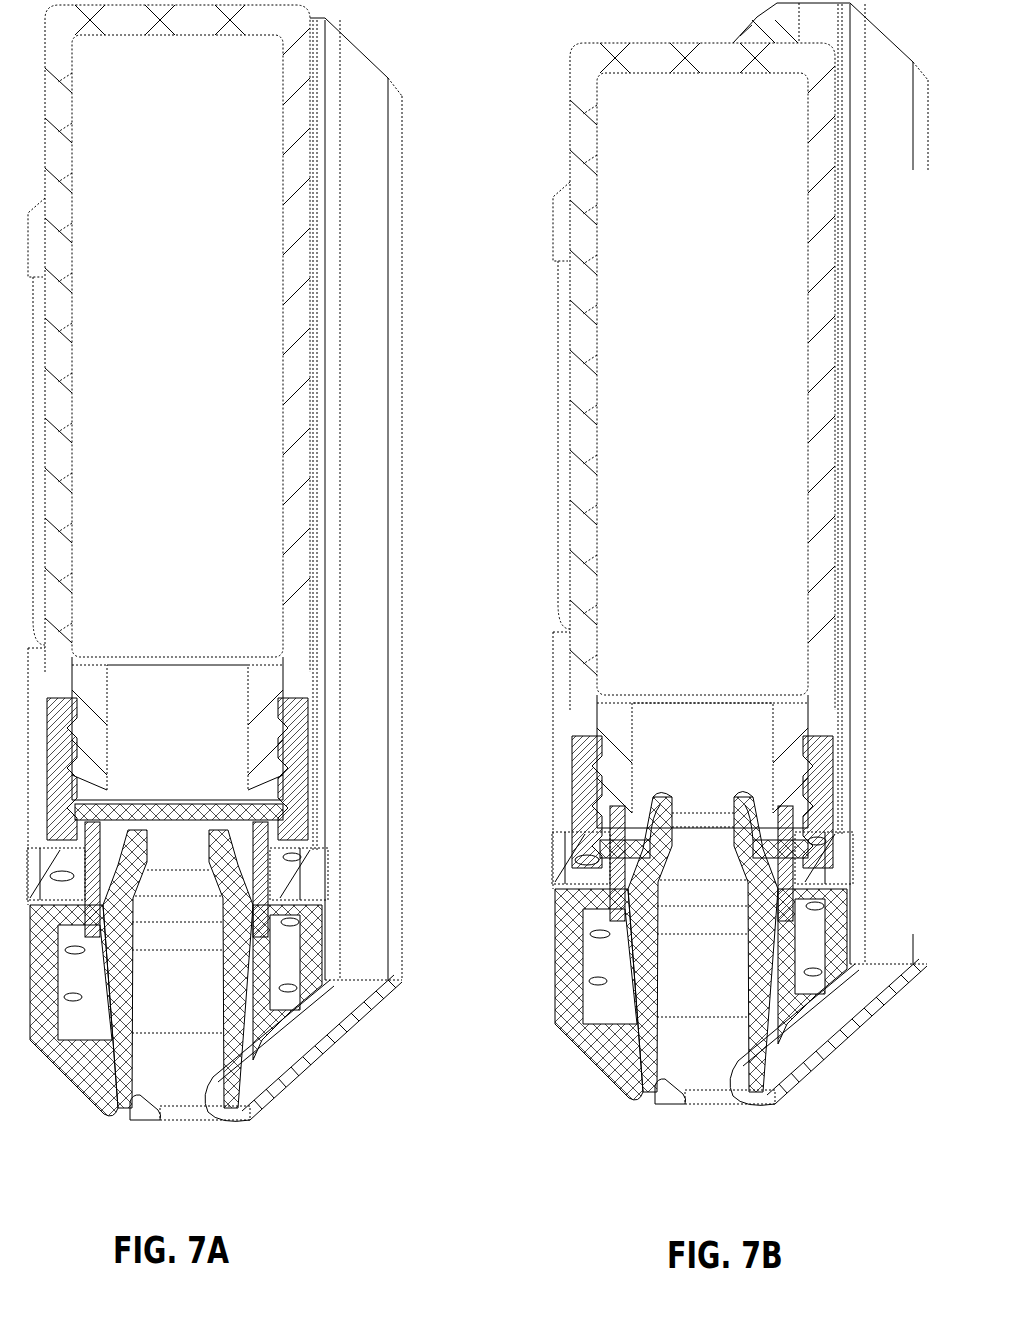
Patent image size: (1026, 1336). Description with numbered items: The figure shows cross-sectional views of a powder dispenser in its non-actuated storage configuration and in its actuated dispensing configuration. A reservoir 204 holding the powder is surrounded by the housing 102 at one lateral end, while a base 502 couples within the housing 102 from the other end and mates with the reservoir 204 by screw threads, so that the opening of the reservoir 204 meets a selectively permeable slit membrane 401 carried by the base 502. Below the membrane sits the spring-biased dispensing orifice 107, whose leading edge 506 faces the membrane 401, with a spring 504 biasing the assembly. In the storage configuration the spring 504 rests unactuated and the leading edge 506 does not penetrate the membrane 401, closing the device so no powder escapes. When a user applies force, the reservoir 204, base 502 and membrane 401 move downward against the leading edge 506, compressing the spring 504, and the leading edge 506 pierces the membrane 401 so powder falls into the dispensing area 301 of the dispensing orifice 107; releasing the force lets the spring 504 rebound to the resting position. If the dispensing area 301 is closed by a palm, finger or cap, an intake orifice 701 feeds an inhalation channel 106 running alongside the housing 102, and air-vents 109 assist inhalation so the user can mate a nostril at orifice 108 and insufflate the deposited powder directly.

In FIG. 7A, the housing 102 is at (402, 233).
In FIG. 7B, the housing 102 is at (560, 230).
In FIG. 7A, the orifice 108 is at (370, 60).
In FIG. 7B, the orifice 108 is at (883, 35).
In FIG. 7A, the reservoir 204 is at (232, 172).
In FIG. 7B, the reservoir 204 is at (622, 138).
In FIG. 7A, the base 502 is at (312, 713).
In FIG. 7B, the base 502 is at (590, 743).
In FIG. 7A, the selectively permeable slit membrane 401 is at (257, 813).
In FIG. 7B, the selectively permeable slit membrane 401 is at (650, 802).
In FIG. 7A, the leading edge 506 is at (223, 852).
In FIG. 7B, the leading edge 506 is at (670, 850).
In FIG. 7A, the spring 504 is at (288, 988).
In FIG. 7B, the spring 504 is at (593, 988).
In FIG. 7A, the inhalation channel 106 is at (383, 962).
In FIG. 7B, the inhalation channel 106 is at (888, 950).
In FIG. 7A, the spring-biased dispensing orifice 107 is at (75, 1085).
In FIG. 7B, the spring-biased dispensing orifice 107 is at (578, 1057).
In FIG. 7A, the air-vent 109 is at (137, 1110).
In FIG. 7B, the air-vent 109 is at (665, 1100).
In FIG. 7A, the dispensing area 301 is at (192, 1115).
In FIG. 7B, the dispensing area 301 is at (715, 1082).
In FIG. 7A, the intake orifice 701 is at (225, 1095).
In FIG. 7B, the intake orifice 701 is at (750, 1080).